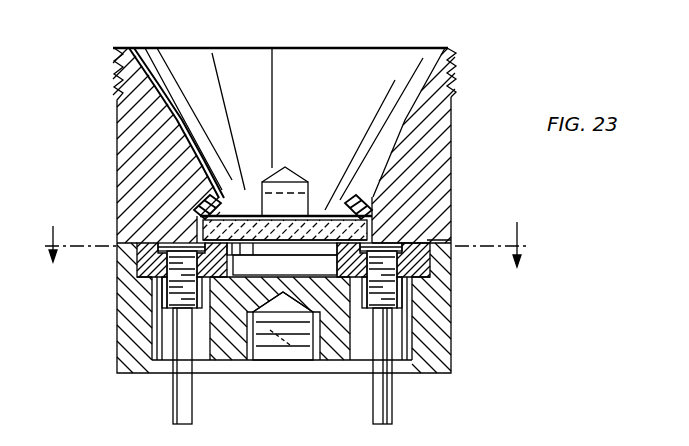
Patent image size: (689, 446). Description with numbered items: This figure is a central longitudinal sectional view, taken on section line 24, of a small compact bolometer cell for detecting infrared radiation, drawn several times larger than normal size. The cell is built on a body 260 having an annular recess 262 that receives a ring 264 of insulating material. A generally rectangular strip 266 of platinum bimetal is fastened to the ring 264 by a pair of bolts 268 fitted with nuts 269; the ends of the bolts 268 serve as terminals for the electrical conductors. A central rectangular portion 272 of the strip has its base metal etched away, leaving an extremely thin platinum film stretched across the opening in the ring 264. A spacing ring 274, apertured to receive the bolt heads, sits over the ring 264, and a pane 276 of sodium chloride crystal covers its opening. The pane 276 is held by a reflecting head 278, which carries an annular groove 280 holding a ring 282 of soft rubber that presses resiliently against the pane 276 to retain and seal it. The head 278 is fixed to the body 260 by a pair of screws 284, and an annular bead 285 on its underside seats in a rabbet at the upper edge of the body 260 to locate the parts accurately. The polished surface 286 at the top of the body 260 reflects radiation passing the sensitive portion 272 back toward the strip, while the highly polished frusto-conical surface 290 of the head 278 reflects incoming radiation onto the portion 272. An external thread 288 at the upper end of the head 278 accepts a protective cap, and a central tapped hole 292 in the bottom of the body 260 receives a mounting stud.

The frusto-conical surface 290 is at (140, 82).
The external thread 288 is at (493, 35).
The reflecting head 278 is at (135, 135).
The annular groove 280 is at (228, 197).
The ring of relatively soft rubber 282 is at (240, 195).
The strip of platinum bimetal 266 is at (330, 213).
The pane 276 is at (260, 200).
The central rectangular portion 272 is at (309, 183).
The spacing ring 274 is at (451, 198).
The annular bead 285 is at (117, 242).
The section line 24 is at (283, 240).
The annular recess 262 is at (137, 280).
The ring of insulating material 264 is at (430, 262).
The nuts 269 is at (165, 296).
The body 260 is at (437, 318).
The bolts 268 is at (173, 407).
The surface at the top of the body 286 is at (275, 258).
The central tapped hole 292 is at (296, 350).
The screws 284 is at (312, 352).